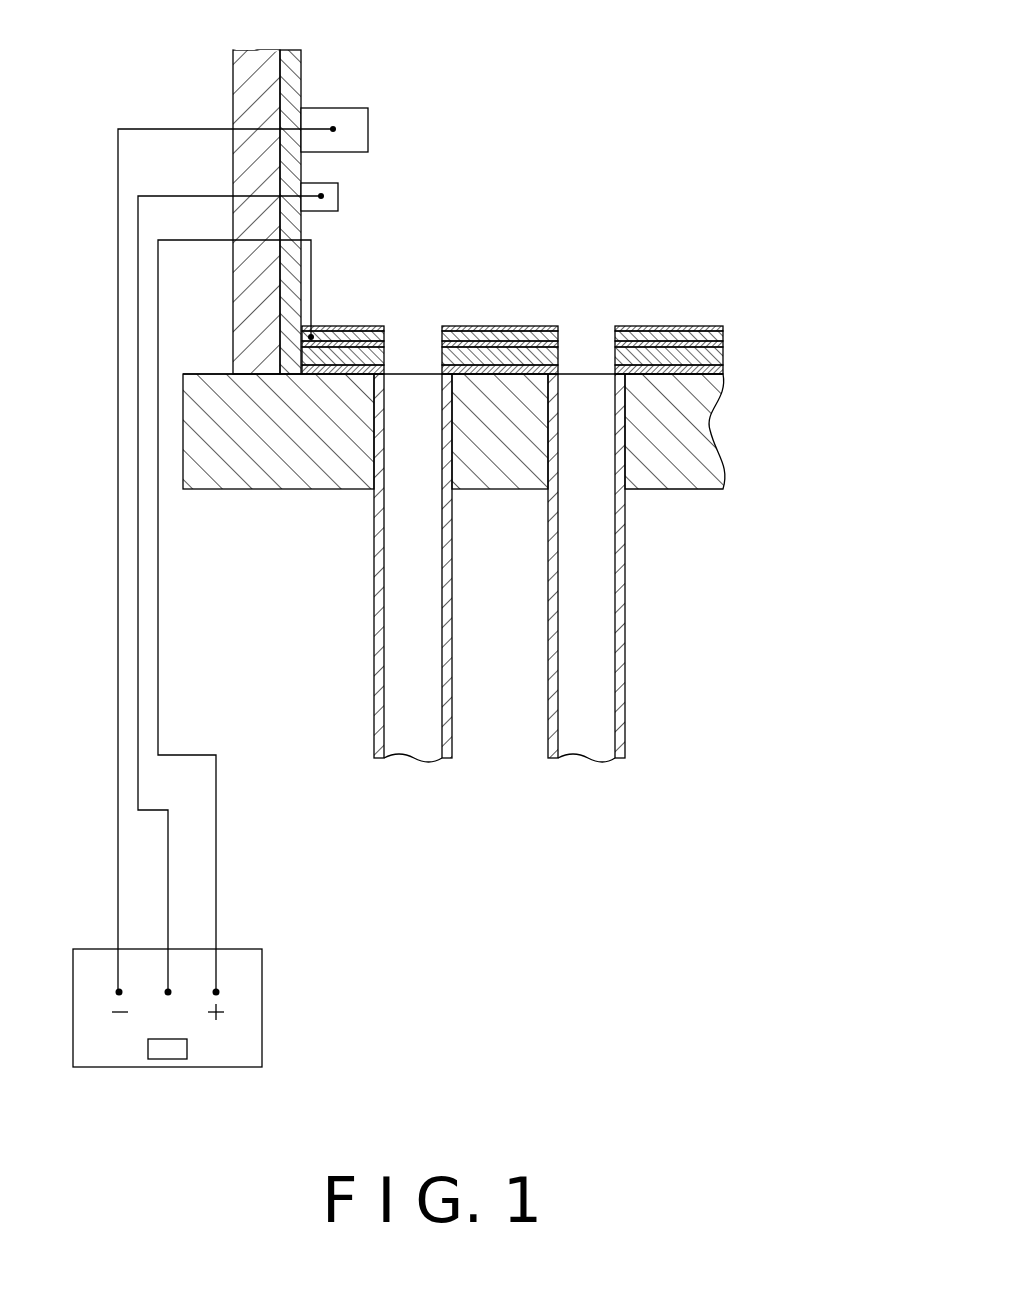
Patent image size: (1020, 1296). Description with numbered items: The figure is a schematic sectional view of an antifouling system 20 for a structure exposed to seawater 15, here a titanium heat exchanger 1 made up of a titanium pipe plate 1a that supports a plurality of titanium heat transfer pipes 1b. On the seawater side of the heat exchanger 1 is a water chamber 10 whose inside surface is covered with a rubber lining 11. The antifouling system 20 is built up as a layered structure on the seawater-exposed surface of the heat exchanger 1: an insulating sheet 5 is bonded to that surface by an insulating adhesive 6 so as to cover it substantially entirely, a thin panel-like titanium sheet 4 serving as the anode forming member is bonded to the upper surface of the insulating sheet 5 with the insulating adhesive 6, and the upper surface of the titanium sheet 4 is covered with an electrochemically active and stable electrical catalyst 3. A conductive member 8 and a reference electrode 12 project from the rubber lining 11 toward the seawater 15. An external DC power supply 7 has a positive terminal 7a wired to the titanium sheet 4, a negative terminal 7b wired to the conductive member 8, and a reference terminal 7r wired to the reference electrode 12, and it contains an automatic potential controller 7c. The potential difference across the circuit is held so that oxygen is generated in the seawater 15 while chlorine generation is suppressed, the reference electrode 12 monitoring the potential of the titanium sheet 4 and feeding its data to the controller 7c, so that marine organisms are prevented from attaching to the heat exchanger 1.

The titanium heat exchanger 1 is at (491, 568).
The titanium pipe plate 1a is at (703, 447).
The titanium heat transfer pipes 1b is at (453, 653).
The electrical catalyst 3 is at (478, 325).
The panel-like titanium sheet 4 is at (528, 327).
The insulating sheet 5 is at (443, 355).
The insulating adhesive 6 is at (443, 370).
The external DC power supply 7 is at (204, 623).
The positive terminal 7a is at (220, 985).
The negative terminal 7b is at (115, 985).
The reference terminal 7r is at (172, 985).
The automatic potential controller 7c is at (160, 1052).
The conductive member 8 is at (368, 122).
The water chamber 10 is at (244, 82).
The rubber lining 11 is at (292, 77).
The reference electrode 12 is at (338, 200).
The seawater 15 is at (631, 168).
The antifouling system 20 is at (544, 304).